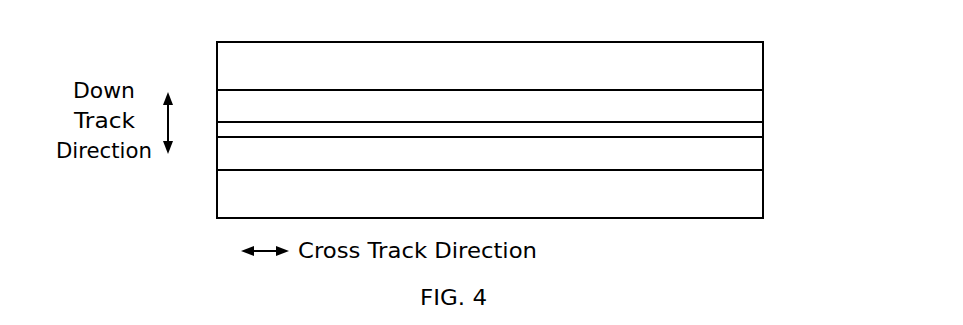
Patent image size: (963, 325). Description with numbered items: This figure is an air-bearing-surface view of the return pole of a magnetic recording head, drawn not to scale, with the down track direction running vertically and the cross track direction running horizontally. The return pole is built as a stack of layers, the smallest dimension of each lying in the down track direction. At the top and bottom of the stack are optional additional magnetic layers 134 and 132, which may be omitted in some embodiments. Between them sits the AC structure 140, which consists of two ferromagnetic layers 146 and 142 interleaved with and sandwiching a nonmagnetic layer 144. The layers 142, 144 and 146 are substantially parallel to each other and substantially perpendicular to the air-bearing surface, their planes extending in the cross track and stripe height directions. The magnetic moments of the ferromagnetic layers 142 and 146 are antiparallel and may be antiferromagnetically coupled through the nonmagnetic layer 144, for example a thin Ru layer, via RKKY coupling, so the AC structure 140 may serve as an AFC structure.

The AC structure 140 is at (853, 119).
The additional magnetic layer 134 is at (763, 59).
The ferromagnetic layer 146 is at (217, 107).
The nonmagnetic layer 144 is at (763, 129).
The ferromagnetic layer 142 is at (217, 153).
The additional magnetic layer 132 is at (763, 200).